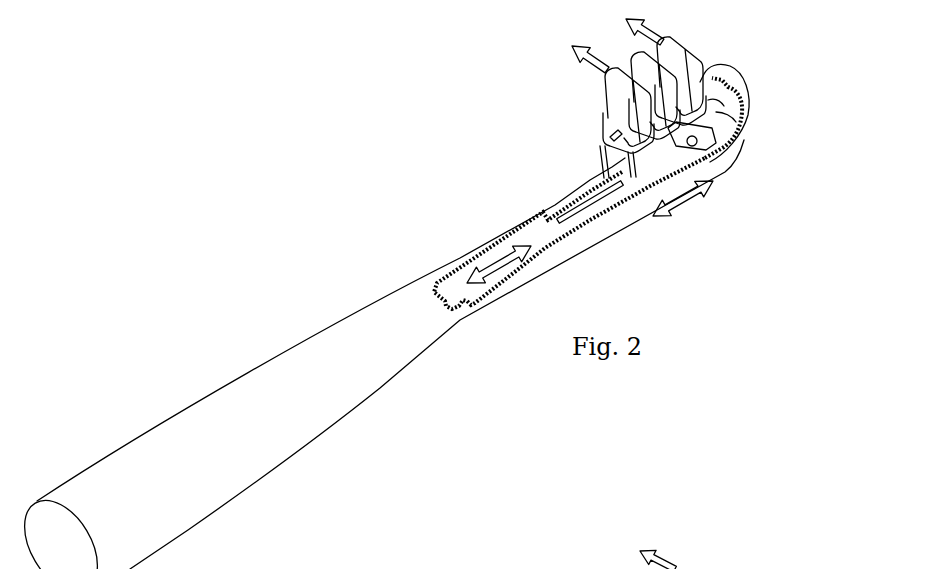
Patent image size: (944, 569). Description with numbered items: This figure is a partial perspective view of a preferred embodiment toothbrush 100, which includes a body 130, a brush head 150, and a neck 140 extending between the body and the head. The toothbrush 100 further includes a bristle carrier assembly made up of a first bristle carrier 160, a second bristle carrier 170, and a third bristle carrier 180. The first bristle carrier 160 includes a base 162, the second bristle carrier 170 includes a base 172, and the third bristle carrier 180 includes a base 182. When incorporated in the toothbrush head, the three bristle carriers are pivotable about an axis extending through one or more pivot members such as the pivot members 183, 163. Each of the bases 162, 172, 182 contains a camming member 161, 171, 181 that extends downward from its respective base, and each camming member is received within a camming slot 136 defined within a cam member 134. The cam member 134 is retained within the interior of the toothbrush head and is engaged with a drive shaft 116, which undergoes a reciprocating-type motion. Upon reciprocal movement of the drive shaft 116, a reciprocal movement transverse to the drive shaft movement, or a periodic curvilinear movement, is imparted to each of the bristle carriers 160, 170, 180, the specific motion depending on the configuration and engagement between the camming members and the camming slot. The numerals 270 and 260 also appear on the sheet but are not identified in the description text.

The toothbrush 100 is at (484, 110).
The body 130 is at (122, 458).
The neck 140 is at (588, 232).
The drive shaft 116 is at (614, 219).
The base 172 is at (702, 168).
The camming member 171 is at (705, 178).
The brush head 150 is at (750, 72).
The base 162 is at (722, 107).
The camming member 161 is at (735, 122).
The camming slot 136 is at (740, 137).
The cam member 134 is at (715, 150).
The third bristle carrier 180 is at (612, 102).
The base 182 is at (603, 126).
The pivot member 183 is at (590, 140).
The camming member 181 is at (608, 152).
The second bristle carrier 170 is at (630, 67).
The first bristle carrier 160 is at (683, 58).
The pivot member 163 is at (705, 98).
The bristle tuft 270 is at (610, 568).
The bristle tuft 260 is at (718, 568).